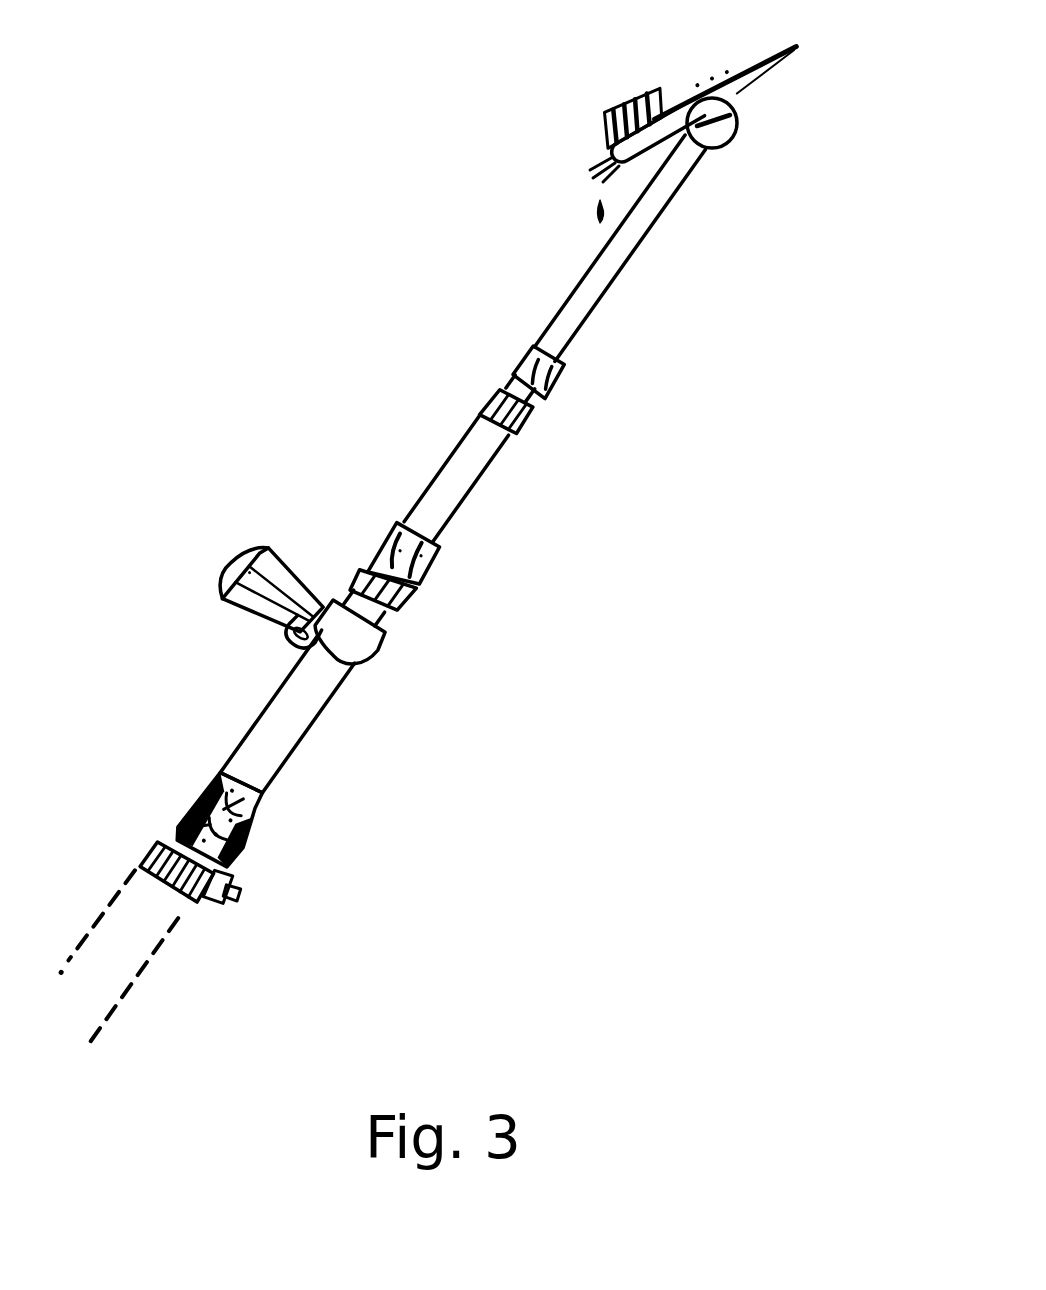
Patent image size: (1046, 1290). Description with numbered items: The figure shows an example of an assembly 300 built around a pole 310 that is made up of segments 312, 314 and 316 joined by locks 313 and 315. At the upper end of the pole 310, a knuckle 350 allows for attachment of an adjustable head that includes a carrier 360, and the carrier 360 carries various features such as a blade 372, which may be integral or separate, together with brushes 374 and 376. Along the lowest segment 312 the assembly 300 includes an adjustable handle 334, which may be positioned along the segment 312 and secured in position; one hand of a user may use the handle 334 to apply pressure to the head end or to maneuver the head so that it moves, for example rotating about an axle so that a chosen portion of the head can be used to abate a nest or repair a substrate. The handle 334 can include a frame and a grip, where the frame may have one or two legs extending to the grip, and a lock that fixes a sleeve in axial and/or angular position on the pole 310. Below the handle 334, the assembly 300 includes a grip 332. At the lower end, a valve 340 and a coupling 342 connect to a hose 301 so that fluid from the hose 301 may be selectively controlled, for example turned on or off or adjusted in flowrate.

The assembly 300 is at (271, 204).
The hose 301 is at (159, 1009).
The pole 310 is at (617, 587).
The segment 312 is at (311, 735).
The lock 313 is at (428, 604).
The segment 314 is at (494, 479).
The lock 315 is at (556, 416).
The segment 316 is at (618, 289).
The grip 332 is at (172, 788).
The adjustable handle 334 is at (282, 658).
The valve 340 is at (257, 905).
The coupling 342 is at (203, 930).
The knuckle 350 is at (744, 148).
The carrier 360 is at (713, 57).
The blade 372 is at (806, 66).
The brush 374 is at (603, 94).
The brush 376 is at (578, 157).